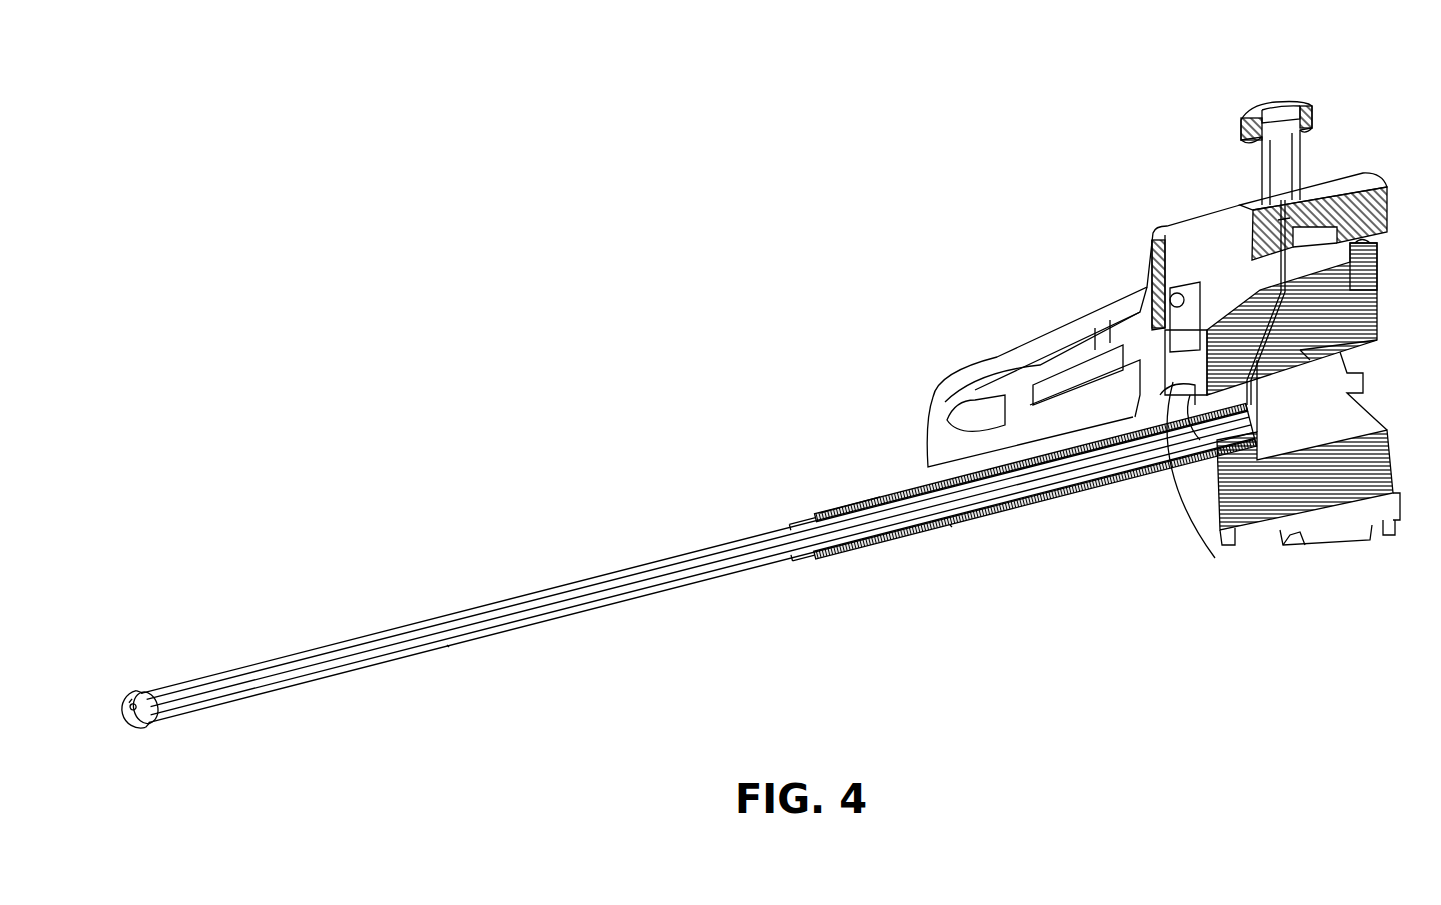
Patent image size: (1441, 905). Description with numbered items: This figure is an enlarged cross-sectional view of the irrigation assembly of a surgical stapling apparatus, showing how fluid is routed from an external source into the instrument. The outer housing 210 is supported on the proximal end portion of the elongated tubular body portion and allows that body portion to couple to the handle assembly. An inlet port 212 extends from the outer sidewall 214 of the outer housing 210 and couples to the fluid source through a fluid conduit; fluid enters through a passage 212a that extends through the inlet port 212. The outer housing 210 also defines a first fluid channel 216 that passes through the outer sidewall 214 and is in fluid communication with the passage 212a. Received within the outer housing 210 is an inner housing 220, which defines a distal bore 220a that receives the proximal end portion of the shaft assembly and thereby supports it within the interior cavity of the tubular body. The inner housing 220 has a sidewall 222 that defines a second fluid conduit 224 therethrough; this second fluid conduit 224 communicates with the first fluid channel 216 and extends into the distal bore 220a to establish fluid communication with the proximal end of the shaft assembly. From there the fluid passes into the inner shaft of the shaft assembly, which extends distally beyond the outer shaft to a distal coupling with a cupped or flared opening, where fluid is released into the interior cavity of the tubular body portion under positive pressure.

The outer housing 210 is at (1070, 300).
The inlet port 212 is at (1305, 106).
The passage 212a is at (1279, 100).
The outer sidewall 214 is at (1340, 178).
The first fluid channel 216 is at (1292, 219).
The inner housing 220 is at (1358, 322).
The distal bore 220a is at (1205, 485).
The sidewall 222 is at (1362, 290).
The second fluid conduit 224 is at (1350, 344).